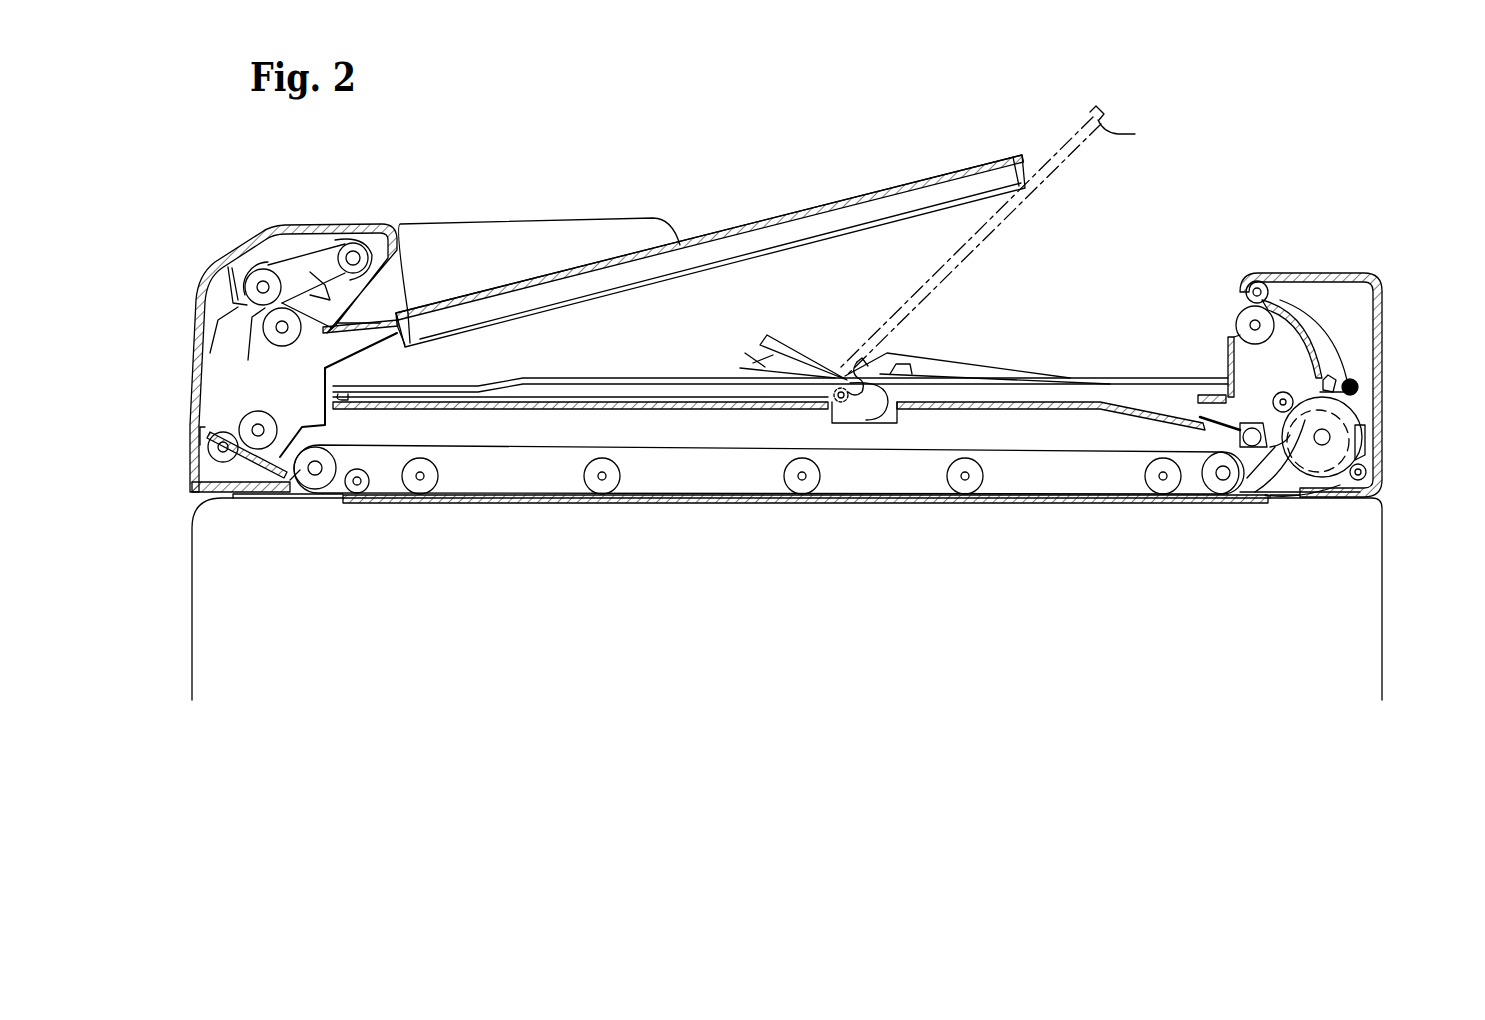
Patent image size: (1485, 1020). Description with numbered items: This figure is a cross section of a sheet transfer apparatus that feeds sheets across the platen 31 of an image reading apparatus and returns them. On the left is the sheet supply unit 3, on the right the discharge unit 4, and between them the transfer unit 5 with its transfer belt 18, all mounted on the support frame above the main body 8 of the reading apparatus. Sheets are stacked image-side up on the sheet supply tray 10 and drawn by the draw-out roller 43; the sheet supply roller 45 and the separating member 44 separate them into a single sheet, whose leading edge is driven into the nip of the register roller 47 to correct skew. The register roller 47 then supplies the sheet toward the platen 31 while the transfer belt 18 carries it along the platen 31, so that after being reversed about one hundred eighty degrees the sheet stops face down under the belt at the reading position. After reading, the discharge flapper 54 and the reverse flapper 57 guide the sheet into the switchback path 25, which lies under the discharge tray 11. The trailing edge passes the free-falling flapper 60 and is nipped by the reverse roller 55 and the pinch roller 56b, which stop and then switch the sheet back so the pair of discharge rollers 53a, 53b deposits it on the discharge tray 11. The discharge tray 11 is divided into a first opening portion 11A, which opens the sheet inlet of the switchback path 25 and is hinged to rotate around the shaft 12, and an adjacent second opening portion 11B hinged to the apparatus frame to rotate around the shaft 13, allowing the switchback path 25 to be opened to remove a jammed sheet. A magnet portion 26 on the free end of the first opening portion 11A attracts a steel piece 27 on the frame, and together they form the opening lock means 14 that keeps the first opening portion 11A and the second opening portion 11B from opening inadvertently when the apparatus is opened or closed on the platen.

The sheet supply unit 3 is at (300, 226).
The discharge unit 4 is at (1367, 275).
The transfer unit 5 is at (660, 472).
The image forming apparatus main body 8 is at (1382, 598).
The sheet supply tray 10 is at (815, 210).
The discharge tray 11 is at (986, 355).
The first opening portion 11A is at (1082, 378).
The second opening portion 11B is at (705, 380).
The shaft 12 is at (845, 412).
The shaft 13 is at (350, 385).
The opening lock means 14 is at (1172, 253).
The transfer belt 18 is at (730, 505).
The switchback path 25 is at (545, 401).
The magnet portion 26 is at (1210, 375).
The steel piece 27 is at (1197, 388).
The platen 31 is at (965, 497).
The draw-out roller 43 is at (355, 238).
The separating member 44 is at (280, 340).
The sheet supply roller 45 is at (247, 268).
The register roller 47 is at (210, 462).
The discharge roller 53a is at (1267, 290).
The discharge roller 53b is at (1242, 290).
The discharge flapper 54 is at (1370, 420).
The reverse roller 55 is at (1345, 420).
The pinch roller 56b is at (1330, 378).
The reverse flapper 57 is at (1257, 470).
The free-falling flapper 60 is at (1320, 445).